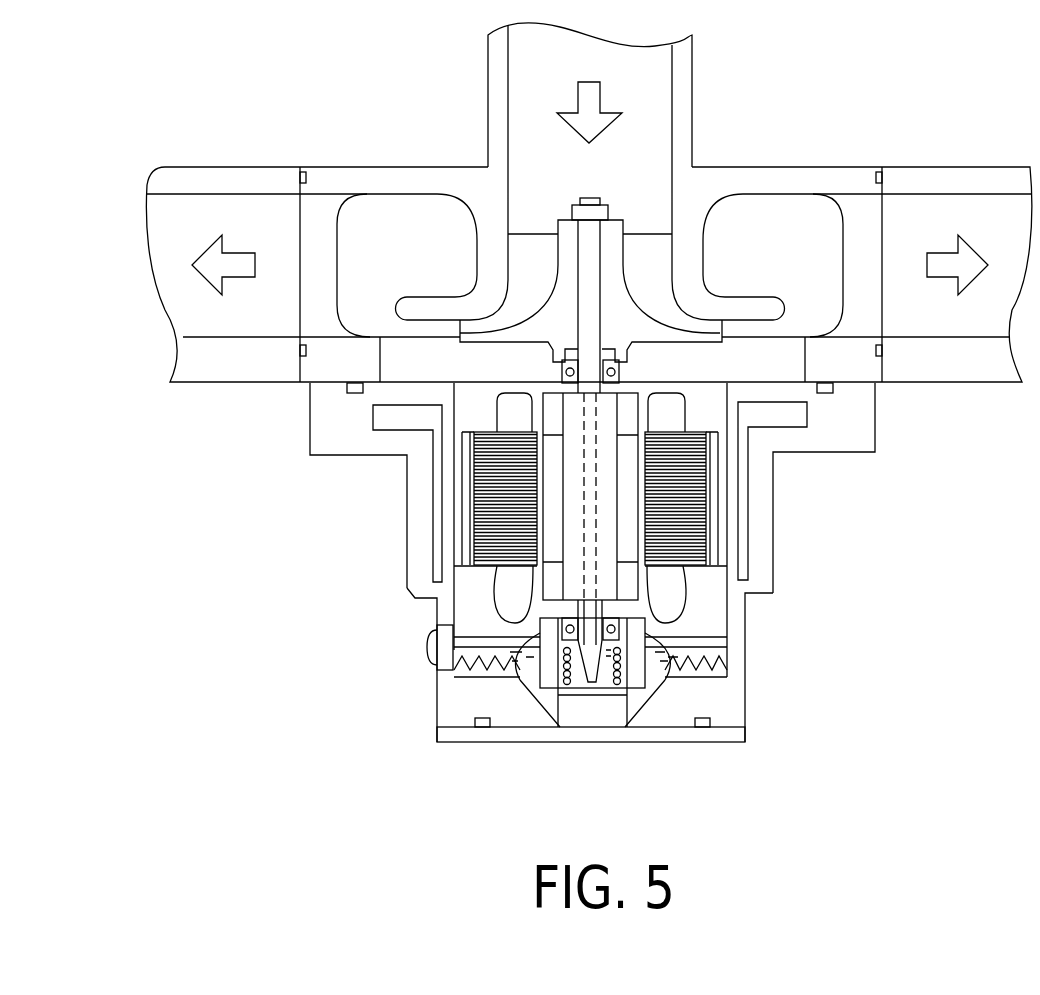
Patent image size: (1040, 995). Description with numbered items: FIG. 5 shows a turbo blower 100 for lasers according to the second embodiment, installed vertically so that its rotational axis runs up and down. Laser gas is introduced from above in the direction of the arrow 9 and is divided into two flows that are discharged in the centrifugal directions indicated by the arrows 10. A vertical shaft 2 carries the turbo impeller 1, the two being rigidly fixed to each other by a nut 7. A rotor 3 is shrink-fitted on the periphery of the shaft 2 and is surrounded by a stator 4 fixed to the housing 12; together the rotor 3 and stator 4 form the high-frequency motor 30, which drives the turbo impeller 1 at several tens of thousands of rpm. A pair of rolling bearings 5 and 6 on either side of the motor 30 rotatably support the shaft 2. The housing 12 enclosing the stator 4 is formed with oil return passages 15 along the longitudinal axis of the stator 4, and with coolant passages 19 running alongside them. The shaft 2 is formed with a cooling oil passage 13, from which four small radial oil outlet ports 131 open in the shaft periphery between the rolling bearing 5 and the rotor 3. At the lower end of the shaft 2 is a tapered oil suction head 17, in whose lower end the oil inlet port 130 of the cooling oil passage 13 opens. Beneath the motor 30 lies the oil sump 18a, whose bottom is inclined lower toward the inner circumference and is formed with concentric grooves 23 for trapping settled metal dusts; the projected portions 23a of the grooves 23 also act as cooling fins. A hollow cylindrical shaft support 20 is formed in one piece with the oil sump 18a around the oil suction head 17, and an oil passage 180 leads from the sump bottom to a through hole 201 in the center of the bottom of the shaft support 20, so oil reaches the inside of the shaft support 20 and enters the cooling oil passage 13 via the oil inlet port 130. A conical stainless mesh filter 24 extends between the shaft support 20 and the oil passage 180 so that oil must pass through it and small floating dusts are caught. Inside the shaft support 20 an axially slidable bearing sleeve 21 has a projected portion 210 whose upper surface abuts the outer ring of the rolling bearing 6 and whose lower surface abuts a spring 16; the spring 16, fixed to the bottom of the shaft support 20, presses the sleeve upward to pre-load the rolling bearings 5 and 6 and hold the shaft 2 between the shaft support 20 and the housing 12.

The turbo blower 100 is at (833, 142).
The arrows 10 is at (237, 252).
The arrow 9 is at (605, 98).
The nut 7 is at (608, 202).
The turbo impeller 1 is at (657, 230).
The cooling oil passage 13 is at (587, 512).
The rolling bearing 5 is at (553, 393).
The housing 12 is at (427, 358).
The coolant passages 19 is at (470, 513).
The oil return passages 15 is at (723, 468).
The stator 4 is at (703, 492).
The rotor 3 is at (645, 503).
The oil outlet ports 131 is at (540, 390).
The high-frequency motor 30 is at (697, 578).
The shaft 2 is at (560, 482).
The rolling bearing 6 is at (530, 648).
The mesh filter 24 is at (748, 636).
The grooves 23 is at (705, 665).
The bearing sleeve 21 is at (705, 672).
The projected portions 23a is at (745, 668).
The oil sump 18a is at (745, 675).
The spring 16 is at (545, 690).
The oil inlet port 130 is at (562, 695).
The through hole 201 is at (597, 700).
The oil suction head 17 is at (635, 700).
The projected portion 210 is at (660, 690).
The oil passage 180 is at (530, 678).
The shaft support 20 is at (447, 742).